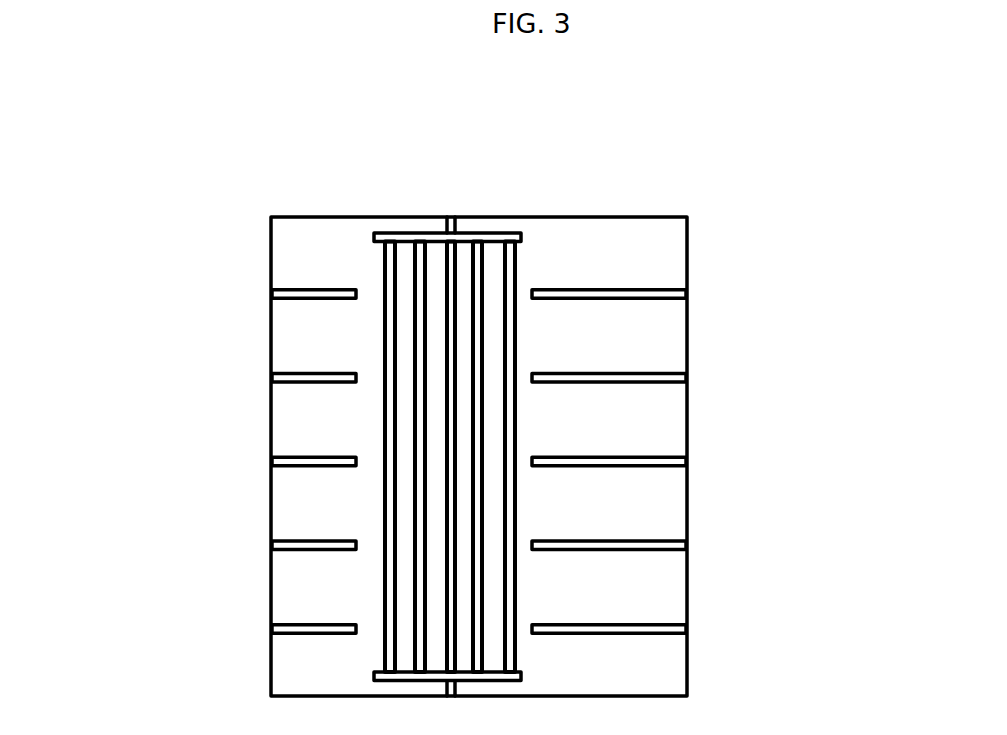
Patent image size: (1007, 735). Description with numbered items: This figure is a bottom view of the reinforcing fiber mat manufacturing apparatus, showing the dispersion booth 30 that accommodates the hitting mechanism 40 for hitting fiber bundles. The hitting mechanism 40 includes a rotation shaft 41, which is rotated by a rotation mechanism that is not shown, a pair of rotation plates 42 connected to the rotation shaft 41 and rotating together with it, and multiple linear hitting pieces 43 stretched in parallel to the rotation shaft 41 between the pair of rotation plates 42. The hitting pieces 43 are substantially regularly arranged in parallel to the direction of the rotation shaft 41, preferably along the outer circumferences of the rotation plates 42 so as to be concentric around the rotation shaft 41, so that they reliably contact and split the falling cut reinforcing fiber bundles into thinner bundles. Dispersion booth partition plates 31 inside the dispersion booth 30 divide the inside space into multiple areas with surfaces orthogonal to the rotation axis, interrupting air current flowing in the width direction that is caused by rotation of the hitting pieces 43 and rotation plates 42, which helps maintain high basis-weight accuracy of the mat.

The dispersion booth 30 is at (688, 598).
The dispersion booth partition plates 31 is at (633, 455).
The hitting mechanism 40 is at (397, 216).
The rotation shaft 41 is at (452, 216).
The rotation plates 42 is at (432, 245).
The hitting pieces 43 is at (517, 290).